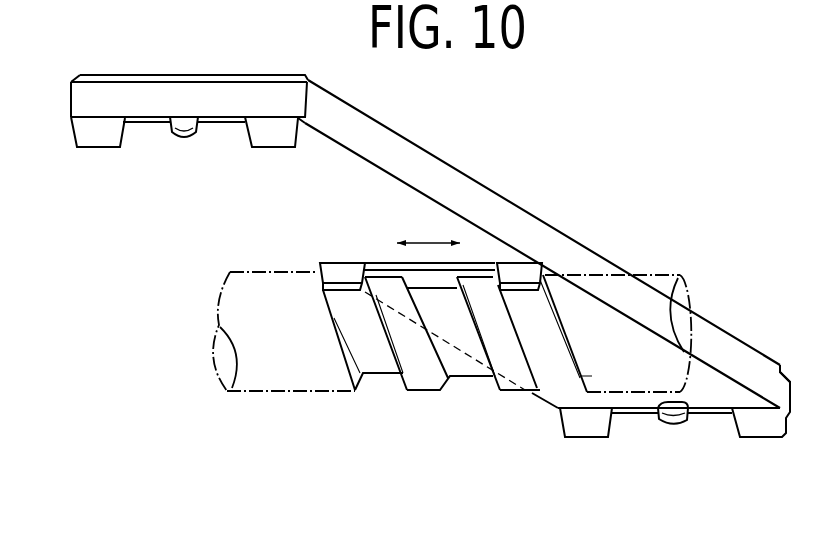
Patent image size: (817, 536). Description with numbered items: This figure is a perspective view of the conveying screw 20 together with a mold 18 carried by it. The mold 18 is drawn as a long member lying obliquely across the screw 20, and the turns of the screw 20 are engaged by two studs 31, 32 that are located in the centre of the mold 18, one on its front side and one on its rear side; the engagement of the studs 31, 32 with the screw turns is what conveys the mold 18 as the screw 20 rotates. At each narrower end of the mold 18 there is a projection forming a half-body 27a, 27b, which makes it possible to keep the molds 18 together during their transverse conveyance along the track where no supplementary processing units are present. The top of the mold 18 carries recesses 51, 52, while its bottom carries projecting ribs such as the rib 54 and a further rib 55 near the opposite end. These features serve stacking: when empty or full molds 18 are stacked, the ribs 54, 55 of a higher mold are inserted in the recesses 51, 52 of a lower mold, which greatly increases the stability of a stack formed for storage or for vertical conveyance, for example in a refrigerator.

The mold 18 is at (482, 203).
The conveying screw 20 is at (248, 367).
The half-body projection 27a is at (188, 125).
The half-body projection 27b is at (672, 421).
The stud 31 is at (337, 272).
The stud 32 is at (520, 276).
The recess 51 is at (290, 82).
The recess 52 is at (787, 365).
The projecting rib 54 is at (262, 132).
The leg of lower end block 55 is at (587, 423).